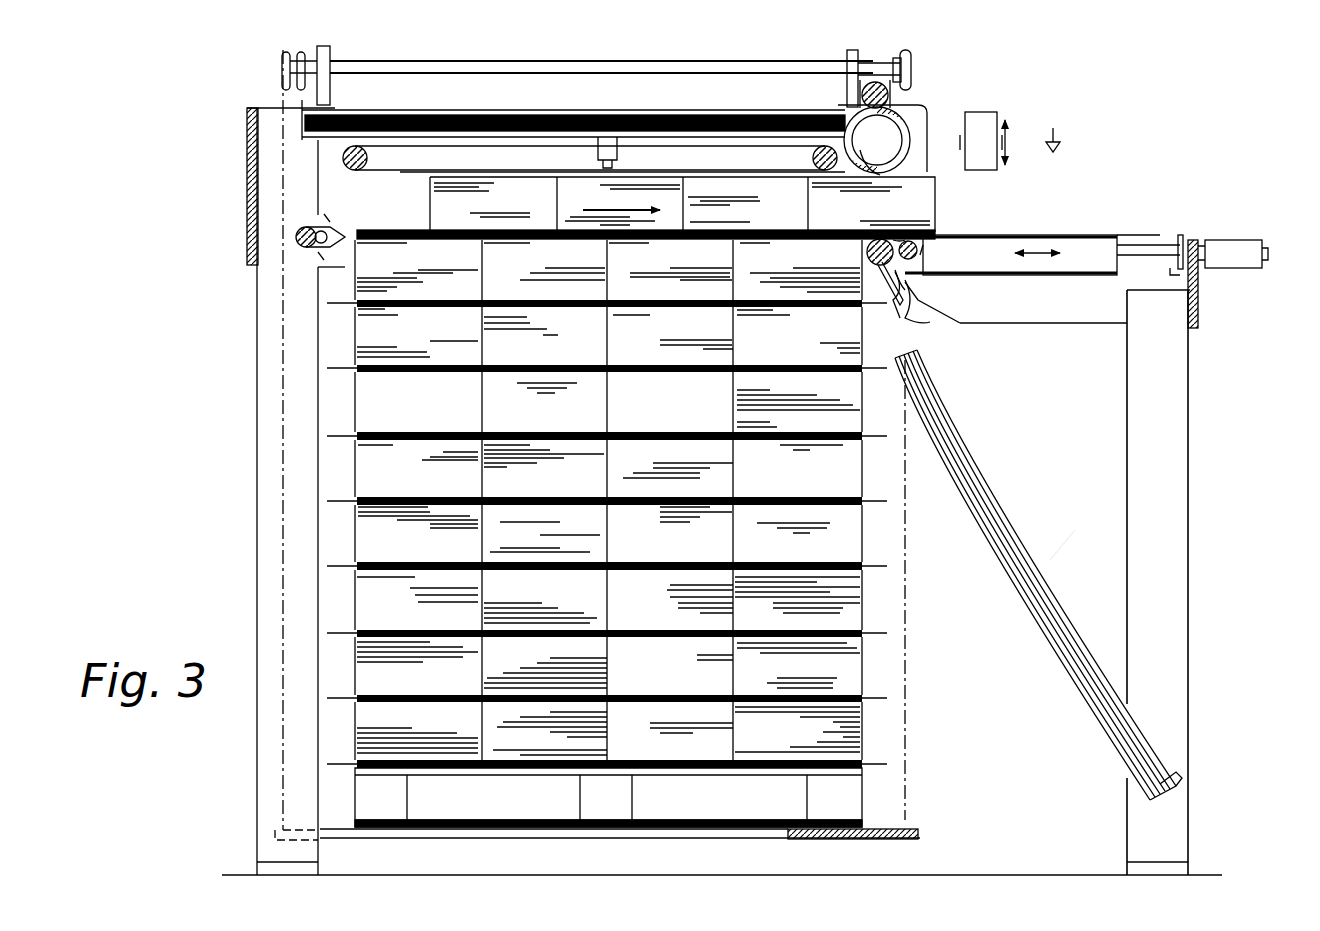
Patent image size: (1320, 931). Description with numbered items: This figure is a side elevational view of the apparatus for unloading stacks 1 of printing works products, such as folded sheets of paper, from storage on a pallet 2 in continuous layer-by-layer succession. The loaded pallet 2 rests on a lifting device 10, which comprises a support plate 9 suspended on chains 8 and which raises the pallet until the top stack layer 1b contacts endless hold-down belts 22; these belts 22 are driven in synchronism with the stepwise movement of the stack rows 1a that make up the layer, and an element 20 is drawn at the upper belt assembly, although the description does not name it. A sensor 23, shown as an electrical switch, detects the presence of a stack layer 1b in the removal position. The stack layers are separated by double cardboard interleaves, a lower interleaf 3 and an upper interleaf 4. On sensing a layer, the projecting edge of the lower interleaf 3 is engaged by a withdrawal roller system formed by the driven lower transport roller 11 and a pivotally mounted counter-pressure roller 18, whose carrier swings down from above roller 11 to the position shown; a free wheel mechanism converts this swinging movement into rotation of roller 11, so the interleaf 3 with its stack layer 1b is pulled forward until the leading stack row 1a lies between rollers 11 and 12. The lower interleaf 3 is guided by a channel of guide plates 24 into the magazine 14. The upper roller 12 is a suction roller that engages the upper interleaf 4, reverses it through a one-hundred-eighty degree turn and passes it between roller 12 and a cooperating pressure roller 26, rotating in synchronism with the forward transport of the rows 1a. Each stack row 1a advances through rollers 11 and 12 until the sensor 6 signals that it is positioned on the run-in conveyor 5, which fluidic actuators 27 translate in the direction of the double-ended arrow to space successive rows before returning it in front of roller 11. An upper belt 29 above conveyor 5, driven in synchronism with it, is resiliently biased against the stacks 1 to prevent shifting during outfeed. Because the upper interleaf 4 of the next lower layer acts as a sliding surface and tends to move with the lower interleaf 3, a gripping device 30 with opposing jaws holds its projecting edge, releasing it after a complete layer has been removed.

The stack of folded sheets of paper 1 is at (925, 210).
The stack row 1a is at (493, 200).
The stack layer 1b is at (420, 211).
The pallet 2 is at (368, 793).
The lower interleaf 3 is at (878, 198).
The upper interleaf 4 is at (730, 118).
The run-in conveyor 5 is at (1100, 250).
The sensor 6 is at (1055, 128).
The chains 8 is at (283, 598).
The support plate 9 is at (915, 830).
The lifting device 10 is at (912, 768).
The lower transport roller 11 is at (875, 266).
The upper transport roller 12 is at (900, 120).
The magazine 14 is at (1050, 558).
The counter-pressure roller 18 is at (930, 268).
The guide rod 20 is at (648, 108).
The hold-down belts 22 is at (455, 150).
The sensor 23 is at (600, 135).
The guide plates 24 is at (925, 325).
The pressure roller 26 is at (872, 92).
The fluidic actuators 27 is at (1235, 248).
The upper belt 29 is at (980, 125).
The gripping device 30 is at (305, 228).